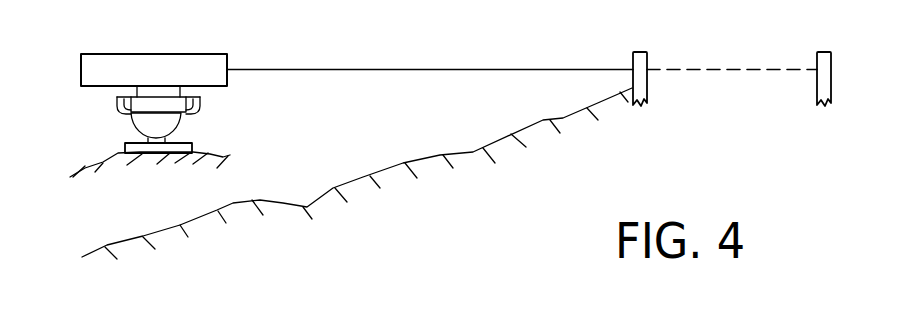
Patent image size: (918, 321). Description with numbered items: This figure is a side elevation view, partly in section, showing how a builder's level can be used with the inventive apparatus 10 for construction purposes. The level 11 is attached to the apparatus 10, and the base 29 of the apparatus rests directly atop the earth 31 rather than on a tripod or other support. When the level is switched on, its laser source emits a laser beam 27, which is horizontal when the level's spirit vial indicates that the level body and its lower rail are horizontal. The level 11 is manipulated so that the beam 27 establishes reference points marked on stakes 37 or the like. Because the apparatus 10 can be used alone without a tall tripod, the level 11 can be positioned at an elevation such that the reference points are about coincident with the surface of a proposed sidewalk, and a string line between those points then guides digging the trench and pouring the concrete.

The apparatus 10 is at (84, 117).
The level 11 is at (157, 55).
The laser beam 27 is at (315, 67).
The base 29 is at (193, 147).
The earth 31 is at (103, 163).
The stakes 37 is at (645, 106).